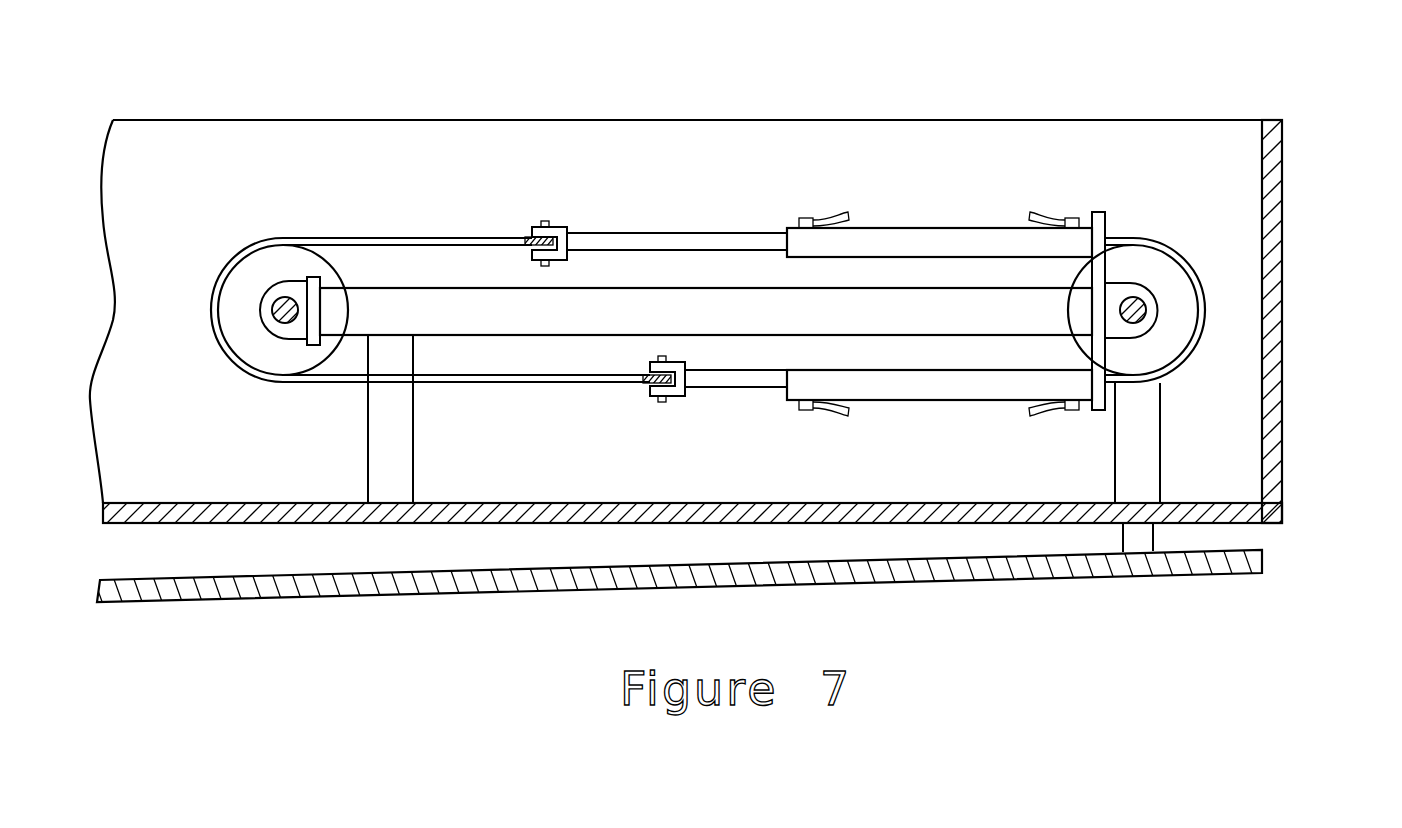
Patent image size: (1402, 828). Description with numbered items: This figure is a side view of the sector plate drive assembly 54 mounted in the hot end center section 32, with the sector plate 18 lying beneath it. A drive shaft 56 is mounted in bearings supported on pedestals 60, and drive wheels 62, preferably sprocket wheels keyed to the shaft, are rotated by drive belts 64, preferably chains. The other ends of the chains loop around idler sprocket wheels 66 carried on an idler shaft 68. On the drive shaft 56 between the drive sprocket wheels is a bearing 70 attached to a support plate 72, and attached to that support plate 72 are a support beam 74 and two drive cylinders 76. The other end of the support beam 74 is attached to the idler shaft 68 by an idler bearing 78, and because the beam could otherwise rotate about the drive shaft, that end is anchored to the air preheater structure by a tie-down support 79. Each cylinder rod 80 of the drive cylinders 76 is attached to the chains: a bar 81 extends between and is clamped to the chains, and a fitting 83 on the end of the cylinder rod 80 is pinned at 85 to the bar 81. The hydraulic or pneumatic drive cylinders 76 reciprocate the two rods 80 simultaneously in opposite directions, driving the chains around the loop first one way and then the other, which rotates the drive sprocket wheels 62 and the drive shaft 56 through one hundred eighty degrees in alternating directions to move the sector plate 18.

The drive assembly 54 is at (675, 150).
The idler sprocket wheels 66 is at (297, 258).
The idler bearing 78 is at (288, 282).
The idler shaft 68 is at (273, 308).
The drive belts 64 is at (447, 240).
The pin 85 is at (545, 222).
The fitting 83 is at (563, 232).
The bar 81 is at (530, 243).
The cylinder rods 80 is at (715, 238).
The drive cylinders 76 is at (902, 235).
The support beam 74 is at (797, 327).
The support plate 72 is at (1103, 225).
The drive shaft 56 is at (1148, 310).
The bearing 70 is at (1143, 355).
The drive wheels 62 is at (1157, 367).
The pedestals 60 is at (1142, 453).
The tie-down support 79 is at (368, 445).
The hot end center section 32 is at (1284, 384).
The sector plate 18 is at (955, 583).